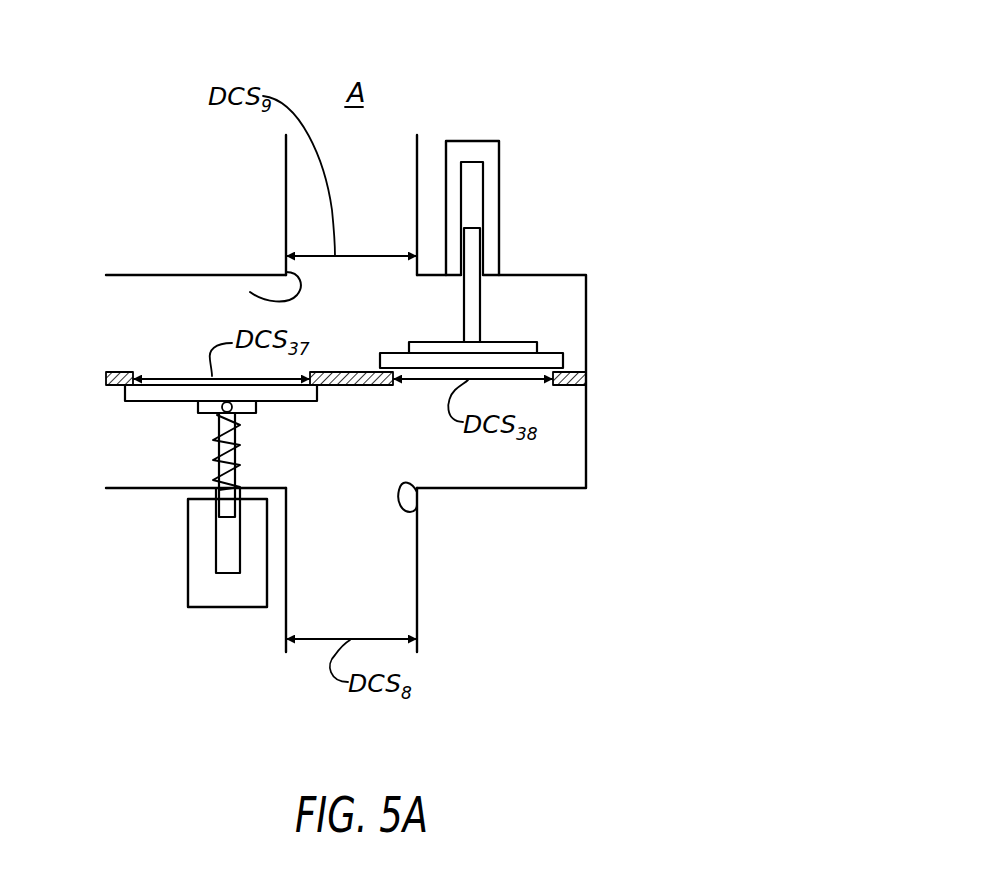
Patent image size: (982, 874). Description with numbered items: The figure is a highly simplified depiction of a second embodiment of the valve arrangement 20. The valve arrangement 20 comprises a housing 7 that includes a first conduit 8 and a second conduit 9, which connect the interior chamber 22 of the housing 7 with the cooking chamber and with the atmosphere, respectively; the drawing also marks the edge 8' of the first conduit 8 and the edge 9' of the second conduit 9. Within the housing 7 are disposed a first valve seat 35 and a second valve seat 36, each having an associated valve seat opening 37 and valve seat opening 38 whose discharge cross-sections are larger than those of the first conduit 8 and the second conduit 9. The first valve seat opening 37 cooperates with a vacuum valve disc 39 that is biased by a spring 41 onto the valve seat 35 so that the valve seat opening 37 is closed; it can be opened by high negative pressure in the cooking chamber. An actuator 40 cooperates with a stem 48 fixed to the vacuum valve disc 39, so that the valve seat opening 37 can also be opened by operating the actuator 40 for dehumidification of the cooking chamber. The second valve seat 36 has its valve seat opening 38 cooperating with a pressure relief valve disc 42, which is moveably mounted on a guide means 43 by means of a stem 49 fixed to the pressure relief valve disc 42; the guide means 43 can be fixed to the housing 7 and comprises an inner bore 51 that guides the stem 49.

The housing 7 is at (104, 331).
The first conduit 8 is at (400, 570).
The lower wall edge 8' is at (452, 508).
The second conduit 9 is at (311, 205).
The upper wall edge 9' is at (240, 263).
The valve arrangement 20 is at (576, 76).
The interior chamber 22 is at (372, 475).
The valve seat 35 is at (106, 372).
The valve seat 36 is at (586, 378).
The valve seat opening 37 is at (133, 372).
The valve seat opening 38 is at (553, 384).
The vacuum valve disc 39 is at (139, 404).
The actuator 40 is at (187, 581).
The spring 41 is at (211, 441).
The pressure relief valve disc 42 is at (549, 345).
The guide means 43 is at (500, 229).
The stem 48 is at (228, 510).
The stem 49 is at (470, 298).
The inner bore 51 is at (471, 188).